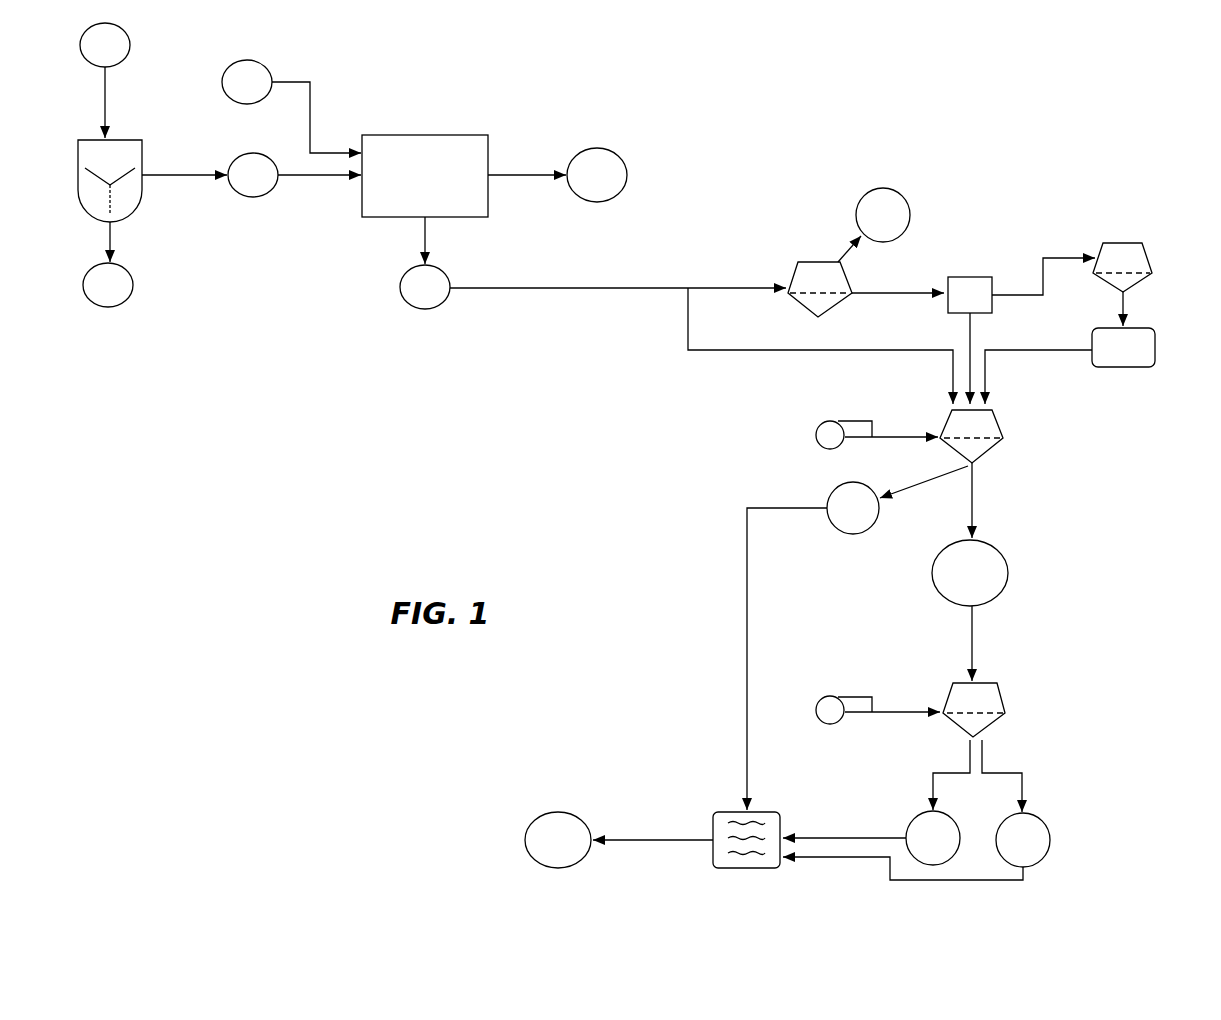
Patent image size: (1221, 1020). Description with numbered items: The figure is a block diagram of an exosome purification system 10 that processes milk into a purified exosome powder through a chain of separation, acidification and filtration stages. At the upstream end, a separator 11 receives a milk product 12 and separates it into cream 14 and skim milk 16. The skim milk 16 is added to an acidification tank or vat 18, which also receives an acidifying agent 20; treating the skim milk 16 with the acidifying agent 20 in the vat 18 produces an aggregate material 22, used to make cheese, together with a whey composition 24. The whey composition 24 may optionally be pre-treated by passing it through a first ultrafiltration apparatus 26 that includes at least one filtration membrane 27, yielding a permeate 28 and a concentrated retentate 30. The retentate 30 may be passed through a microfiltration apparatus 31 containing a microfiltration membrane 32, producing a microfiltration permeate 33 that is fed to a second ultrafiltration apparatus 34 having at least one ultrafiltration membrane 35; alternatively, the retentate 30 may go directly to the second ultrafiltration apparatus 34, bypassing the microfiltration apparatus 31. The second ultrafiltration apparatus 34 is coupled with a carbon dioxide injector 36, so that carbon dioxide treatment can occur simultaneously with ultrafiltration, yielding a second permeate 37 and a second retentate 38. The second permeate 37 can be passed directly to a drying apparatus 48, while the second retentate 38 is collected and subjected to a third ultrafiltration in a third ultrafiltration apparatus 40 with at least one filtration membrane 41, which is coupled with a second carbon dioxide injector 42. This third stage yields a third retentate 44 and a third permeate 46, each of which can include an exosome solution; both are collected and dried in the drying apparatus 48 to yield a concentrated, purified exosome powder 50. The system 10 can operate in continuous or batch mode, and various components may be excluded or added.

The exosome purification system 10 is at (787, 129).
The separator 11 is at (152, 201).
The milk product 12 is at (105, 80).
The cream 14 is at (108, 285).
The skim milk 16 is at (294, 175).
The acidification tank or vat 18 is at (464, 199).
The acidifying agent 20 is at (291, 106).
The aggregate material 22 is at (597, 175).
The whey composition 24 is at (676, 334).
The first ultrafiltration apparatus 26 is at (866, 276).
The filtration membrane 27 is at (826, 303).
The permeate 28 is at (883, 215).
The concentrated retentate 30 is at (1021, 331).
The microfiltration apparatus 31 is at (1122, 284).
The microfiltration membrane 32 is at (1128, 278).
The microfiltration permeate 33 is at (1070, 366).
The second ultrafiltration apparatus 34 is at (941, 474).
The ultrafiltration membrane 35 is at (985, 448).
The carbon dioxide injector 36 is at (832, 431).
The second permeate 37 is at (813, 646).
The second retentate 38 is at (970, 610).
The third ultrafiltration apparatus 40 is at (977, 747).
The filtration membrane 41 is at (990, 720).
The second carbon dioxide injector 42 is at (834, 706).
The third retentate 44 is at (916, 846).
The third permeate 46 is at (871, 838).
The drying apparatus 48 is at (722, 858).
The exosome powder 50 is at (558, 840).